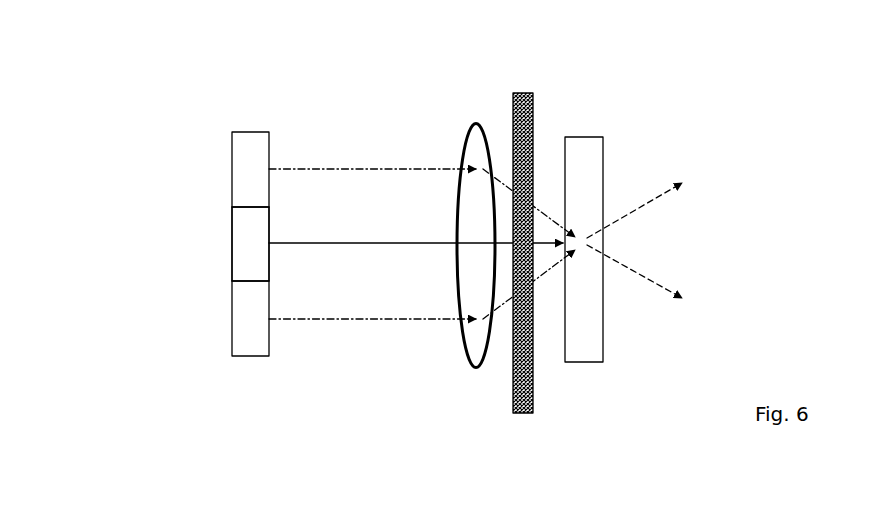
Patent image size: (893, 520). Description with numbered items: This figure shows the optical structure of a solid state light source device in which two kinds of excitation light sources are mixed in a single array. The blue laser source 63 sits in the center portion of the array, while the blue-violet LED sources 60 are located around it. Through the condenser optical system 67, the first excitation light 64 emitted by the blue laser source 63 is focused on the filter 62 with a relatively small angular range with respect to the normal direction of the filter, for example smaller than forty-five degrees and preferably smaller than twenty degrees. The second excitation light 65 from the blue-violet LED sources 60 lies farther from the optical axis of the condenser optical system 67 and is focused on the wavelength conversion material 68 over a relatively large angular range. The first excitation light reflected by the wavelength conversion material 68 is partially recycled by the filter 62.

The blue-violet LED sources 60 is at (252, 323).
The filter 62 is at (523, 390).
The blue laser source 63 is at (248, 244).
The first excitation light 64 is at (405, 242).
The second excitation light 65 is at (328, 173).
The condenser optical system 67 is at (472, 147).
The wavelength conversion material 68 is at (590, 173).